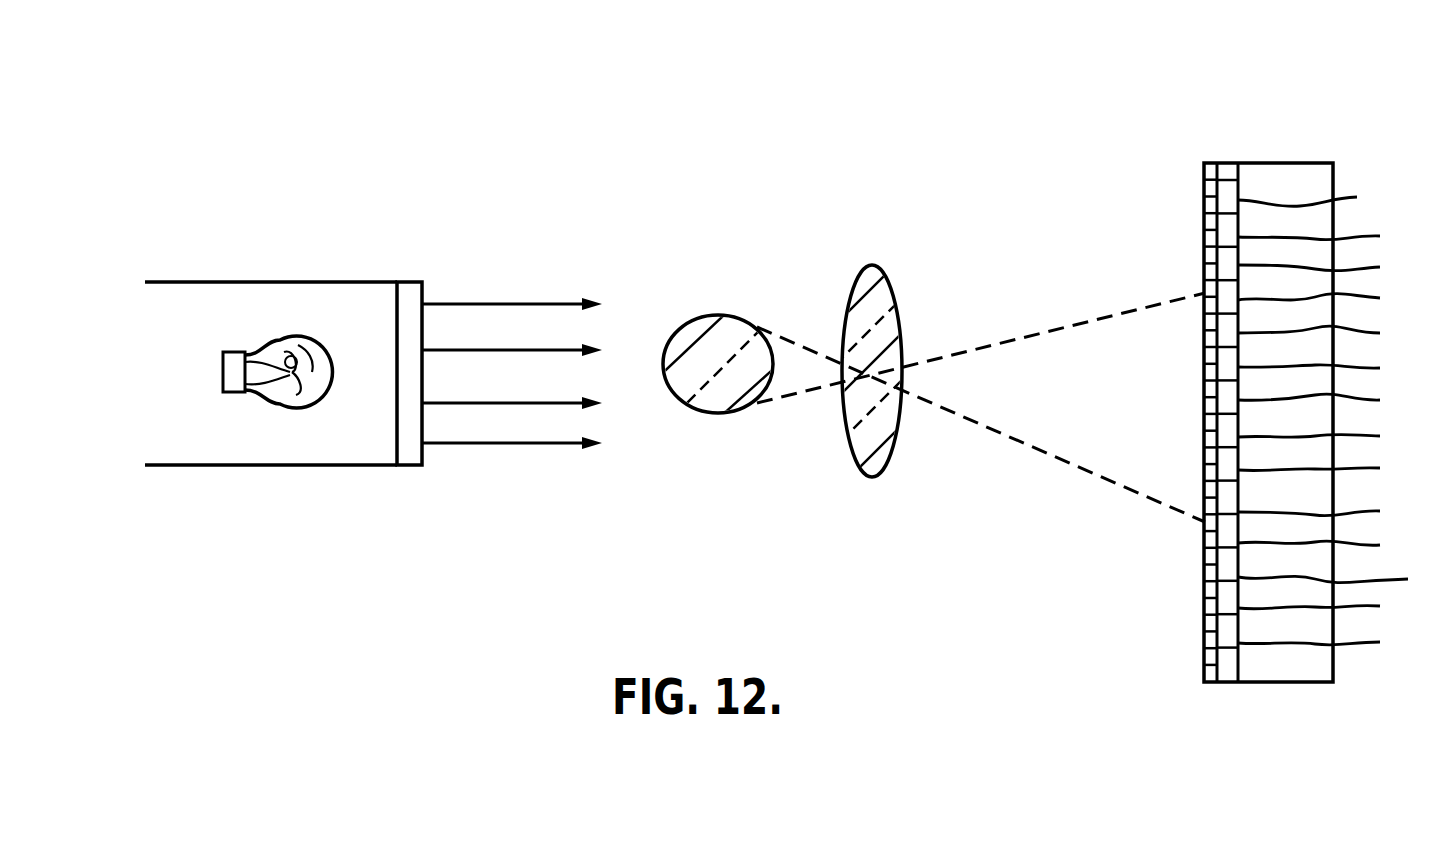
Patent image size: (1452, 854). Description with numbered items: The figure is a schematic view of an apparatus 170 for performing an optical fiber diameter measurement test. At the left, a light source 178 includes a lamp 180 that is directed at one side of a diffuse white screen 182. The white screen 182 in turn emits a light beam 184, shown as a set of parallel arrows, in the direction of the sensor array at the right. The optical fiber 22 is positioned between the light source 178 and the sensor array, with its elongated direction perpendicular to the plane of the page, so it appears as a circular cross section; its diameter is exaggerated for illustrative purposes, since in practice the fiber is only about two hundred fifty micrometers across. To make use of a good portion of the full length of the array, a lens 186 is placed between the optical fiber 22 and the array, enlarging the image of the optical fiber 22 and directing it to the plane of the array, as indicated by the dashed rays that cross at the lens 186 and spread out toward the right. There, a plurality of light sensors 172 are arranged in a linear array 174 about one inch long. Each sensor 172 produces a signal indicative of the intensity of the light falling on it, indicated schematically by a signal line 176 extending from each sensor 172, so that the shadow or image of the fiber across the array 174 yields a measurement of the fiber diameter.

The apparatus 170 is at (424, 114).
The light source 178 is at (362, 199).
The lamp 180 is at (282, 345).
The diffuse white screen 182 is at (424, 466).
The light beam 184 is at (537, 302).
The optical fiber 22 is at (726, 314).
The lens 186 is at (880, 266).
The light sensors 172 is at (1207, 188).
The linear array 174 is at (1246, 157).
The signal line 176 is at (1352, 238).